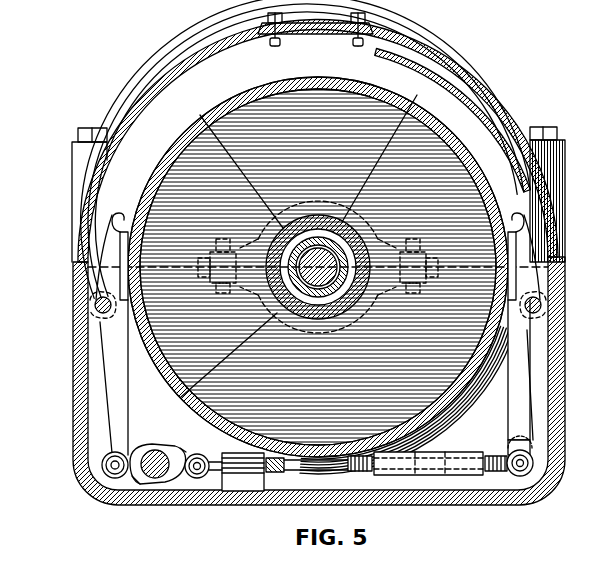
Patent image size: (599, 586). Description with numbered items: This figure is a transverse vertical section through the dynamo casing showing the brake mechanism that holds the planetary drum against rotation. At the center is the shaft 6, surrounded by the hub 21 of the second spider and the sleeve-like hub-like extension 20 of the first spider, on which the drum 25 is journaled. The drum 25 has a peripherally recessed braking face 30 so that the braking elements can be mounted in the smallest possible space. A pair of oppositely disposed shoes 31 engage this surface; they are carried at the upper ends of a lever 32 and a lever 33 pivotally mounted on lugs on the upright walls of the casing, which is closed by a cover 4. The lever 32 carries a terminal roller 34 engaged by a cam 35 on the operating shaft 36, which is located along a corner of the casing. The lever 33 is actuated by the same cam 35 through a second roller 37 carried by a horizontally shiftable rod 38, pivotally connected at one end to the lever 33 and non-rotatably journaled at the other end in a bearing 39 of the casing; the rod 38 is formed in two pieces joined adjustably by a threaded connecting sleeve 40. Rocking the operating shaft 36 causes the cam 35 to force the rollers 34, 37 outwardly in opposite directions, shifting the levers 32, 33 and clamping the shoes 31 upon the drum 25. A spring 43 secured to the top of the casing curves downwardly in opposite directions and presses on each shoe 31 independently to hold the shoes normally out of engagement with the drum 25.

The cover 4 is at (163, 92).
The shaft 6 is at (182, 395).
The hub-like extension 20 is at (318, 247).
The hub 21 is at (382, 149).
The drum 25 is at (306, 154).
The braking face 30 is at (302, 86).
The shoes 31 is at (122, 253).
The lever 32 is at (108, 389).
The lever 33 is at (523, 414).
The terminal roller 34 is at (100, 469).
The cam 35 is at (143, 480).
The operating shaft 36 is at (157, 479).
The second roller 37 is at (198, 479).
The rod 38 is at (310, 468).
The bearing 39 is at (240, 479).
The threaded connecting sleeve 40 is at (437, 478).
The spring 43 is at (458, 91).